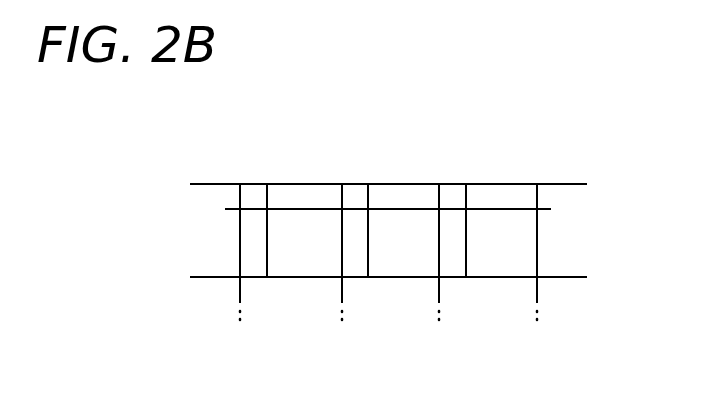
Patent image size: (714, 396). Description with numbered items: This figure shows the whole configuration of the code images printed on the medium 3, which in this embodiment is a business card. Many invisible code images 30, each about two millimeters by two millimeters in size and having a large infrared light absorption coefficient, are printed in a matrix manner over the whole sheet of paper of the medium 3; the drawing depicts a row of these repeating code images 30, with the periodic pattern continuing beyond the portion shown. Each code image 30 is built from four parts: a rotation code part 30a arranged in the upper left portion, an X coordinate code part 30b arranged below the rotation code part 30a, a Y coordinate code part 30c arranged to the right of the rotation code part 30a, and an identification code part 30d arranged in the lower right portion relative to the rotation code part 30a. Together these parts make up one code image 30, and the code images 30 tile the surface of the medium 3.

The medium 3 is at (198, 175).
The code image 30 is at (517, 278).
The rotation code part 30a is at (453, 192).
The X coordinate code part 30b is at (457, 230).
The Y coordinate code part 30c is at (527, 198).
The identification code part 30d is at (525, 244).